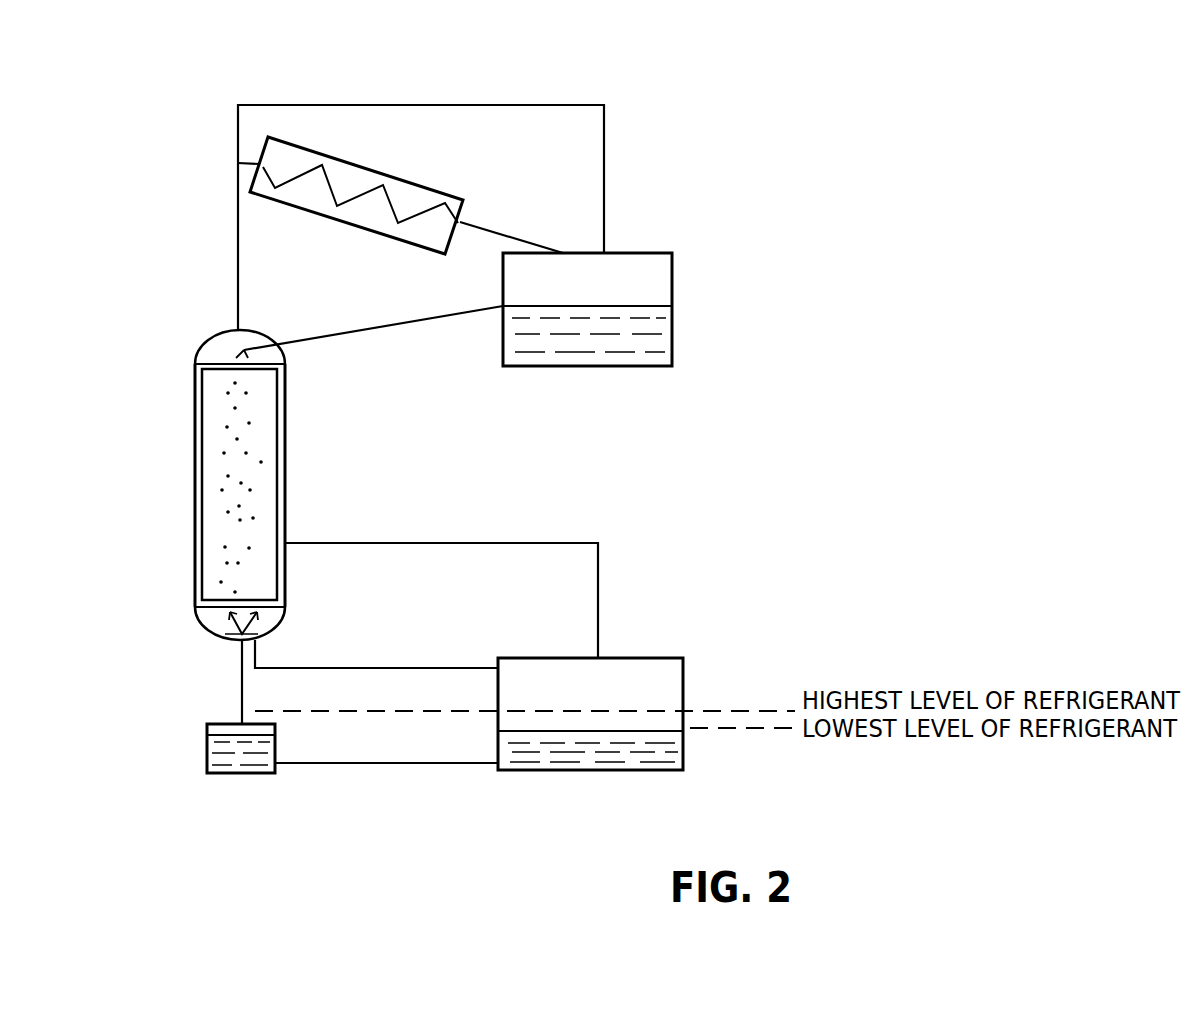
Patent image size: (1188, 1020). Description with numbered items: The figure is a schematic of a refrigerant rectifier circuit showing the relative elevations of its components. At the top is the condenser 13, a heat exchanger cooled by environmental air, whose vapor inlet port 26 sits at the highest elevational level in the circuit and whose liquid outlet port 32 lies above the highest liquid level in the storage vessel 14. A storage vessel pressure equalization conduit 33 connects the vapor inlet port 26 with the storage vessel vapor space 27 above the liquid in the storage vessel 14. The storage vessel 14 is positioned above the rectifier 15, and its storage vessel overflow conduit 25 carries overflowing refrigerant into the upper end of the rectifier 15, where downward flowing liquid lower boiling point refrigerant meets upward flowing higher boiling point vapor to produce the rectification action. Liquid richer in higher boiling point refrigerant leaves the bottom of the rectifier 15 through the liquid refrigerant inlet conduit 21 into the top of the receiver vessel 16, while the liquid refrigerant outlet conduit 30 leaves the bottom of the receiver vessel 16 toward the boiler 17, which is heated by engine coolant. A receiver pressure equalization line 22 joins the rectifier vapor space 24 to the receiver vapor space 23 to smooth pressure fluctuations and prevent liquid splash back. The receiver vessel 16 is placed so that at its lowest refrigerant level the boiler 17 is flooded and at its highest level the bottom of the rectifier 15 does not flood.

The condenser 13 is at (405, 180).
The storage vessel 14 is at (672, 330).
The rectifier 15 is at (285, 455).
The receiver vessel 16 is at (683, 748).
The boiler 17 is at (207, 760).
The liquid refrigerant inlet conduit 21 is at (440, 667).
The receiver pressure equalization line 22 is at (468, 542).
The receiver vapor space 23 is at (573, 696).
The rectifier vapor space 24 is at (225, 345).
The storage vessel overflow conduit 25 is at (420, 323).
The vapor inlet port 26 is at (262, 166).
The storage vessel vapor space 27 is at (571, 293).
The liquid refrigerant outlet conduit 30 is at (397, 775).
The liquid outlet port 32 is at (462, 222).
The storage vessel pressure equalization conduit 33 is at (562, 104).